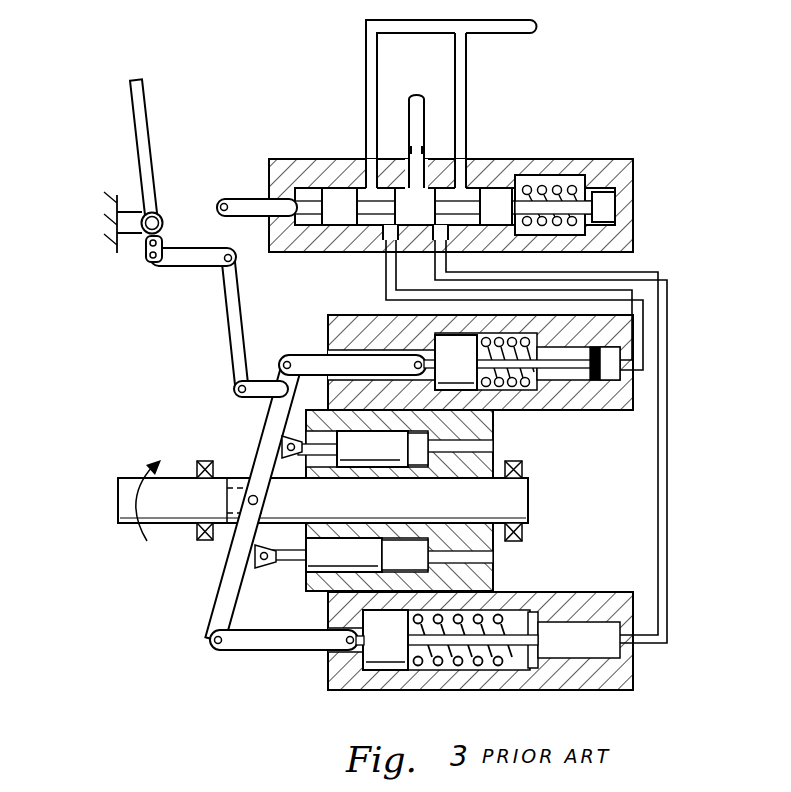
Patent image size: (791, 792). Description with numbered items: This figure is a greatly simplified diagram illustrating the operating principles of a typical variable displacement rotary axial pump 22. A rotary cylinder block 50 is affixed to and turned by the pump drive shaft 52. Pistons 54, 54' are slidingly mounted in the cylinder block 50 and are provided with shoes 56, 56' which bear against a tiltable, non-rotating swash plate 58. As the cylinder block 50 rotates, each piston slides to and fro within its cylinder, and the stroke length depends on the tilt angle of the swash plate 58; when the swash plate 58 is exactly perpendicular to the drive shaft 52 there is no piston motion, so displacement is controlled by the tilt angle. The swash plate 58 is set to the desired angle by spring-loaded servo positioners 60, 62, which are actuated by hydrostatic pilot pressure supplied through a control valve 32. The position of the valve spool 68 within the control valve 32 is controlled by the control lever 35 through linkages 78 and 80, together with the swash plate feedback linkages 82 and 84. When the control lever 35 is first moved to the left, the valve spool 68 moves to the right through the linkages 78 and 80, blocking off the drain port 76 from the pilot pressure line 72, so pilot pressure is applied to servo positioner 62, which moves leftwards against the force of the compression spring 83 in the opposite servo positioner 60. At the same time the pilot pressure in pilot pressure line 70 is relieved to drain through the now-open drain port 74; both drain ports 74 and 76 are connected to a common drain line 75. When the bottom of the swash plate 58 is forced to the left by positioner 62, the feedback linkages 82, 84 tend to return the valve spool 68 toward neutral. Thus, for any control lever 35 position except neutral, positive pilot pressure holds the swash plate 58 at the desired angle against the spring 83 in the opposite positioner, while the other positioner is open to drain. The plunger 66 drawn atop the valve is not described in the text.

The variable displacement rotary axial pump 22 is at (120, 622).
The control valve 32 is at (632, 144).
The control lever 35 is at (128, 103).
The rotary cylinder block 50 is at (495, 572).
The pump drive shaft 52 is at (120, 497).
The piston 54 is at (363, 449).
The piston 54' is at (350, 555).
The shoe 56 is at (220, 559).
The shoe 56' is at (251, 437).
The swash plate 58 is at (226, 595).
The servo positioner 60 is at (470, 362).
The servo positioner 62 is at (398, 641).
The plunger 66 is at (420, 94).
The valve spool 68 is at (343, 197).
The pilot pressure line 70 is at (386, 278).
The pilot pressure line 72 is at (668, 296).
The drain port 74 is at (366, 70).
The common drain line 75 is at (537, 25).
The drain port 76 is at (467, 62).
The linkage 78 is at (190, 264).
The linkage 80 is at (248, 204).
The swash plate feedback linkage 82 is at (253, 401).
The compression spring 83 is at (520, 390).
The swash plate feedback linkage 84 is at (230, 327).